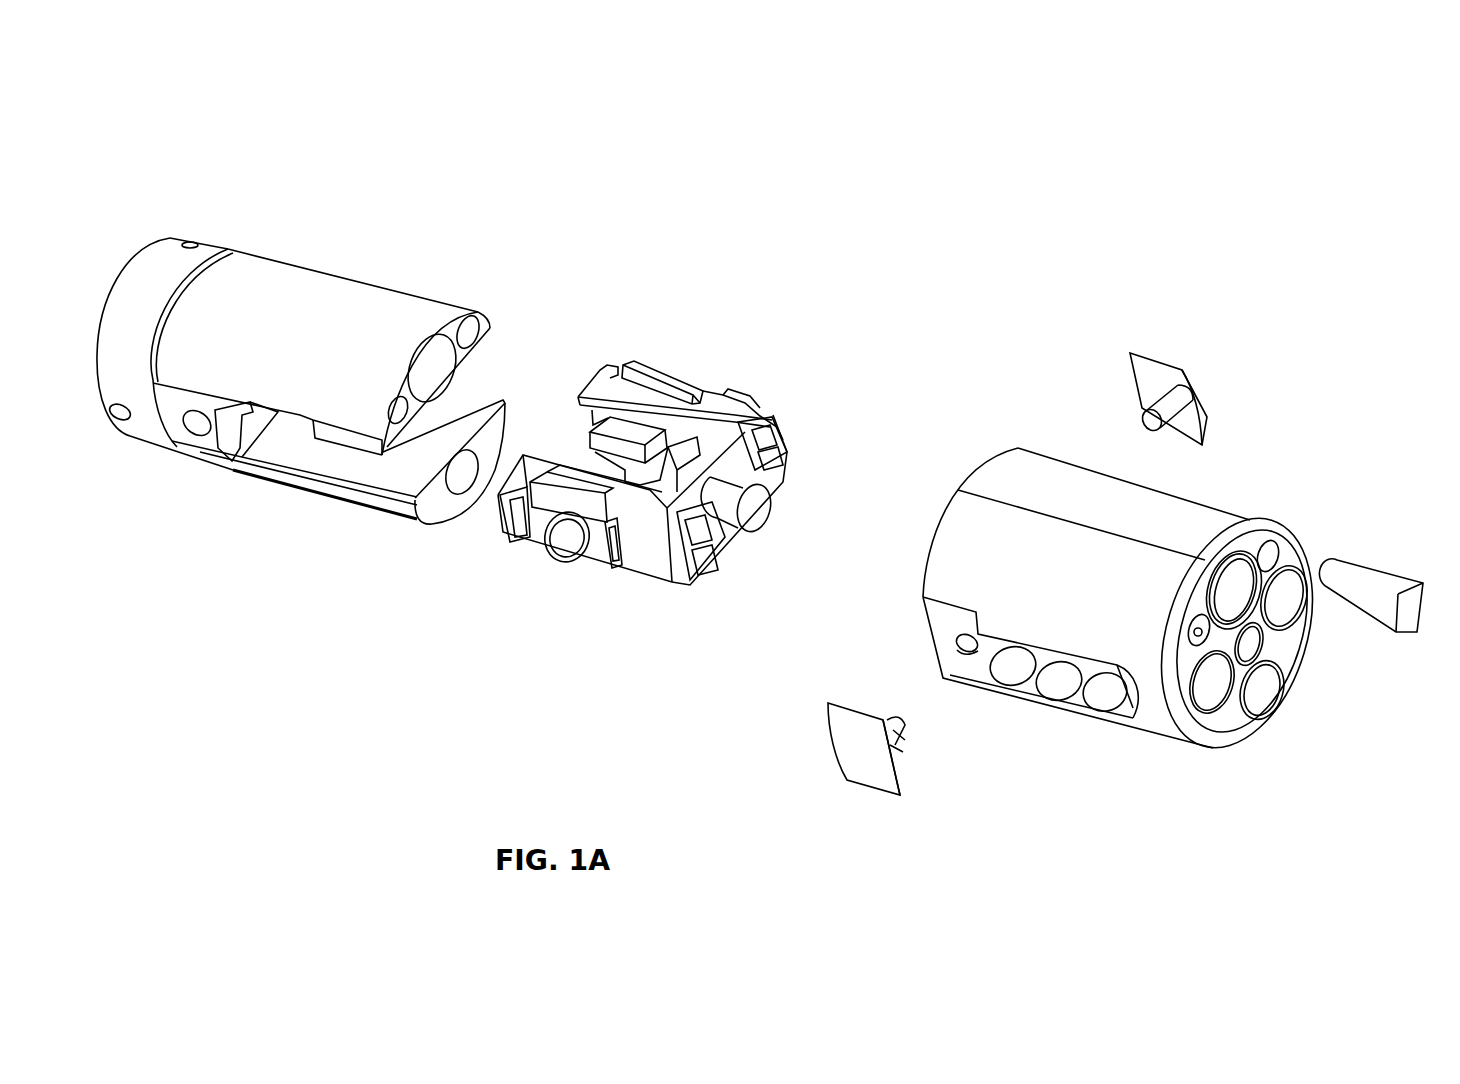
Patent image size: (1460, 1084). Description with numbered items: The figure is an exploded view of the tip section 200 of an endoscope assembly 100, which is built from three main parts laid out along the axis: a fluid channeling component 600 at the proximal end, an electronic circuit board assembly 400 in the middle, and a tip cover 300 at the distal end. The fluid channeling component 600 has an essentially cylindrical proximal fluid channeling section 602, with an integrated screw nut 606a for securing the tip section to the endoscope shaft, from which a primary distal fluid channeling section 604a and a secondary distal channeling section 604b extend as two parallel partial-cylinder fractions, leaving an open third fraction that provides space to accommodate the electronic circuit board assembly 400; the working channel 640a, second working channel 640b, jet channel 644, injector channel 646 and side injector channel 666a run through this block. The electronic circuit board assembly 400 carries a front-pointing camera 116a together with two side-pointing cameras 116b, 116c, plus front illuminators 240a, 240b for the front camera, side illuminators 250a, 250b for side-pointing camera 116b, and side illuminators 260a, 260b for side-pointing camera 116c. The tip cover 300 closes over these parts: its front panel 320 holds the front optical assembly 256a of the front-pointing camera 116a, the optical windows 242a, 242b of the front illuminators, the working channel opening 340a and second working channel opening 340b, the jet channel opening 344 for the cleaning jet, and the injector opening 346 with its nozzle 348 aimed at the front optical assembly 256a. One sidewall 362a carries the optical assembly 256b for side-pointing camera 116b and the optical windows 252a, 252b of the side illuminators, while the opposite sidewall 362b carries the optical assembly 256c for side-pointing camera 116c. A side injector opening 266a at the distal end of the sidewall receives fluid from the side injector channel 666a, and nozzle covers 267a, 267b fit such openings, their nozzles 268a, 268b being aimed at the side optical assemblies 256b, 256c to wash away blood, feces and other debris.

The endoscope assembly 100 is at (1054, 255).
The tip section 200 is at (1247, 296).
The tip cover 300 is at (1354, 449).
The electronic circuit board assembly 400 is at (804, 374).
The fluid channeling component 600 is at (200, 212).
The proximal fluid channeling section 602 is at (140, 275).
The primary distal fluid channeling section 604a is at (273, 282).
The secondary distal channeling section 604b is at (289, 482).
The integrated screw nut 606a is at (122, 421).
The working channel 640a is at (428, 340).
The second working channel 640b is at (478, 467).
The jet channel 644 is at (407, 362).
The injector channel 646 is at (487, 327).
The side injector channel 666a is at (197, 438).
The front-pointing camera 116a is at (768, 518).
The side-pointing camera 116b is at (570, 568).
The side-pointing camera 116c is at (676, 351).
The front illuminator 240a is at (712, 570).
The front illuminator 240b is at (780, 483).
The side illuminator 250a is at (620, 573).
The side illuminator 250b is at (522, 547).
The side illuminator 260a is at (724, 378).
The side illuminator 260b is at (623, 345).
The optical window 252a is at (1093, 708).
The optical window 252b is at (985, 663).
The front optical assembly 256a is at (1278, 680).
The optical assembly 256b is at (1040, 697).
The optical assembly 256c is at (1002, 428).
The side injector opening 266a is at (958, 643).
The nozzle cover 267a is at (845, 753).
The nozzle cover 267b is at (1150, 360).
The nozzle 268a is at (900, 762).
The nozzle 268b is at (1197, 407).
The front panel 320 is at (1293, 640).
The working channel opening 340a is at (1230, 552).
The second working channel opening 340b is at (1272, 700).
The jet channel opening 344 is at (1199, 613).
The injector opening 346 is at (1270, 547).
The nozzle 348 is at (1408, 577).
The sidewall 362a is at (1137, 704).
The sidewall 362b is at (1044, 421).
The optical window 242a is at (1223, 717).
The optical window 242b is at (1294, 553).